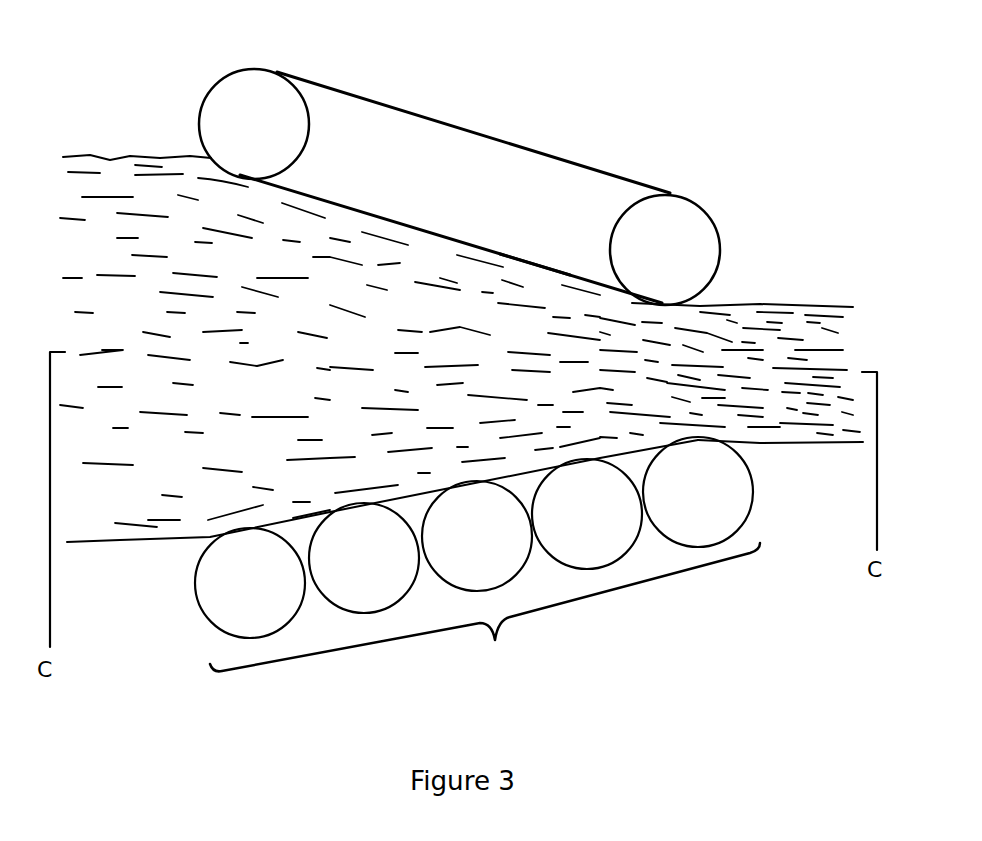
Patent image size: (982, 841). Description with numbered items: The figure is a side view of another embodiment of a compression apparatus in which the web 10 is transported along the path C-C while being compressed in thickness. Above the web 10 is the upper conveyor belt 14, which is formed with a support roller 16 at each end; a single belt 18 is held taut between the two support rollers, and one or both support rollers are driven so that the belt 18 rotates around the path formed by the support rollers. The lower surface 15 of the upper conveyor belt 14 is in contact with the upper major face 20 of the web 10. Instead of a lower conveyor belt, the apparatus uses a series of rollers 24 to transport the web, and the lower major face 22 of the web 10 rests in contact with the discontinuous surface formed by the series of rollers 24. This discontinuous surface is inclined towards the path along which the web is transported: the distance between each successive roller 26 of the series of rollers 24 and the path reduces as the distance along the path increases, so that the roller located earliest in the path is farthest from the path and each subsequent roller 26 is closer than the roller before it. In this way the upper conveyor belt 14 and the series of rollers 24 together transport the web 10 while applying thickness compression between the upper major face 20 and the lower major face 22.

The web 10 is at (797, 330).
The upper conveyor belt 14 is at (695, 210).
The lower surface of the upper conveyor belt 15 is at (541, 267).
The support roller 16 is at (262, 100).
The belt 18 is at (405, 112).
The upper major face 20 is at (137, 159).
The lower major face 22 is at (124, 541).
The series of rollers 24 is at (485, 609).
The roller 26 is at (256, 604).